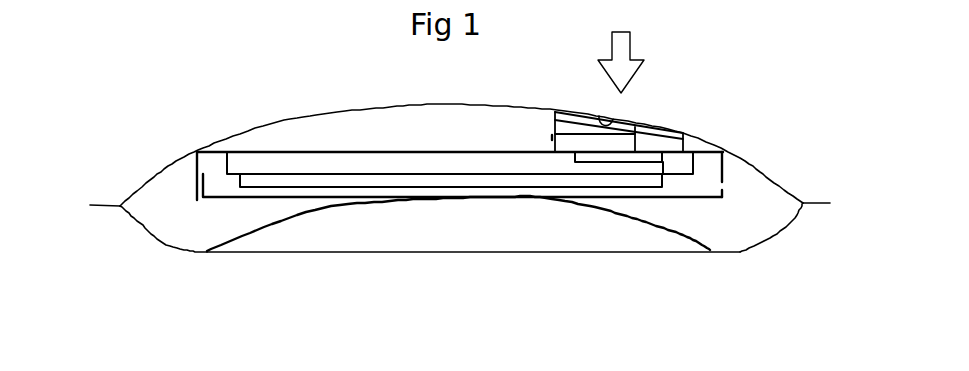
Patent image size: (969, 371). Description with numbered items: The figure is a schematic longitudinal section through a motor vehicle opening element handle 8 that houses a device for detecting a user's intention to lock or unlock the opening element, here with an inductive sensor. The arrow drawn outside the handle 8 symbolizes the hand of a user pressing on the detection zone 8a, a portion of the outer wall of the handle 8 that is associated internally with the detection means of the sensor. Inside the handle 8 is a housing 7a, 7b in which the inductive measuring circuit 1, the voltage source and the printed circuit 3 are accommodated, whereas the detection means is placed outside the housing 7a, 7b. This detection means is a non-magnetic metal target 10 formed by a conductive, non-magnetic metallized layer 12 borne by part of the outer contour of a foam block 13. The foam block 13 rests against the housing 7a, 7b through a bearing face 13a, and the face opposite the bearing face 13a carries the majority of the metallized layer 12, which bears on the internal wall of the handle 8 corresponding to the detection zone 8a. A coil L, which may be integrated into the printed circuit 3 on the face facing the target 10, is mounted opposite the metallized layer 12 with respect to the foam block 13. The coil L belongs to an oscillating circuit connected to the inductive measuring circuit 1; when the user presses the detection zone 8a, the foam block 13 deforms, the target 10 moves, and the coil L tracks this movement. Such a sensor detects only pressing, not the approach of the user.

The inductive measuring circuit 1 is at (320, 182).
The printed circuit 3 is at (383, 162).
The housing 7a is at (222, 198).
The housing 7b is at (278, 152).
The opening element handle 8 is at (210, 124).
The detection zone 8a is at (596, 116).
The non-magnetic metal target 10 is at (673, 158).
The metallized layer 12 is at (633, 130).
The foam block 13 is at (603, 142).
The bearing face 13a is at (563, 152).
The coil L is at (587, 157).